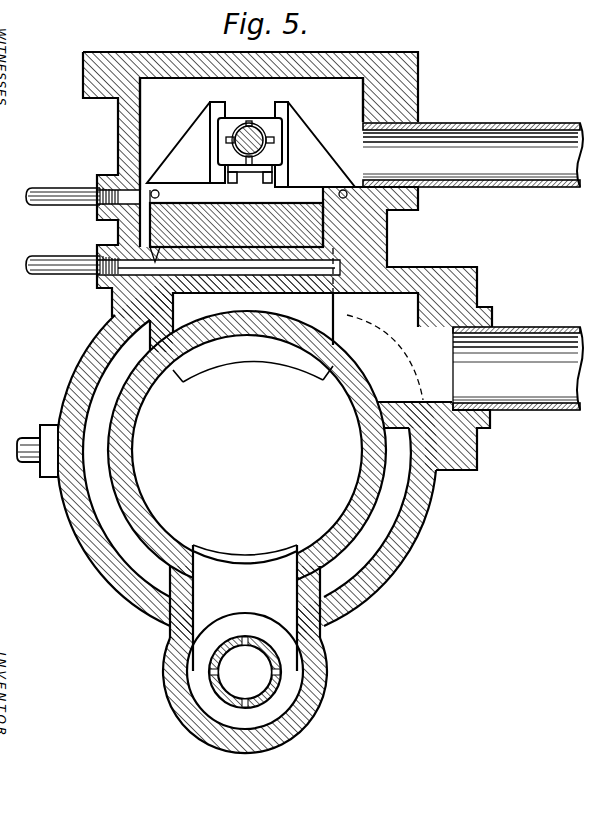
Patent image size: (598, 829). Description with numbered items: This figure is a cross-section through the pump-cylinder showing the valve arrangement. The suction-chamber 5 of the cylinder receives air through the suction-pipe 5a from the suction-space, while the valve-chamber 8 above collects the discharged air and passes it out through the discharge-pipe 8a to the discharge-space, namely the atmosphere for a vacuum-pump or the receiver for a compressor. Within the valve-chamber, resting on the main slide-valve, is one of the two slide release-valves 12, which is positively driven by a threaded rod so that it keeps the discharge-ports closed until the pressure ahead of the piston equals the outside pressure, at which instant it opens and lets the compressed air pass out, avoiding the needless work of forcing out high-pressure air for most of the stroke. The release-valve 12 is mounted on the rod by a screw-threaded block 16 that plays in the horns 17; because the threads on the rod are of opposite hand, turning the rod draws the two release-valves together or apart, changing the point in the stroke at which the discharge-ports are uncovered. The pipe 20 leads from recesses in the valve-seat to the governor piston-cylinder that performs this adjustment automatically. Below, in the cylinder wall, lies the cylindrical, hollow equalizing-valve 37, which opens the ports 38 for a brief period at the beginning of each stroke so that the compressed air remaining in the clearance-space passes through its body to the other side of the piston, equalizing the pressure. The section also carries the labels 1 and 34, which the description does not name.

The valve 1 is at (317, 227).
The suction-chamber 5 is at (254, 402).
The suction-pipe 5a is at (518, 368).
The valve-chamber 8 is at (251, 134).
The discharge-pipe 8a is at (473, 155).
The slide release-valve 12 is at (251, 150).
The screw-threaded block 16 is at (240, 121).
The horns 17 is at (214, 103).
The pipe 20 is at (85, 274).
The spring seat 34 is at (250, 178).
The equalizing-valve 37 is at (258, 658).
The ports 38 is at (245, 683).